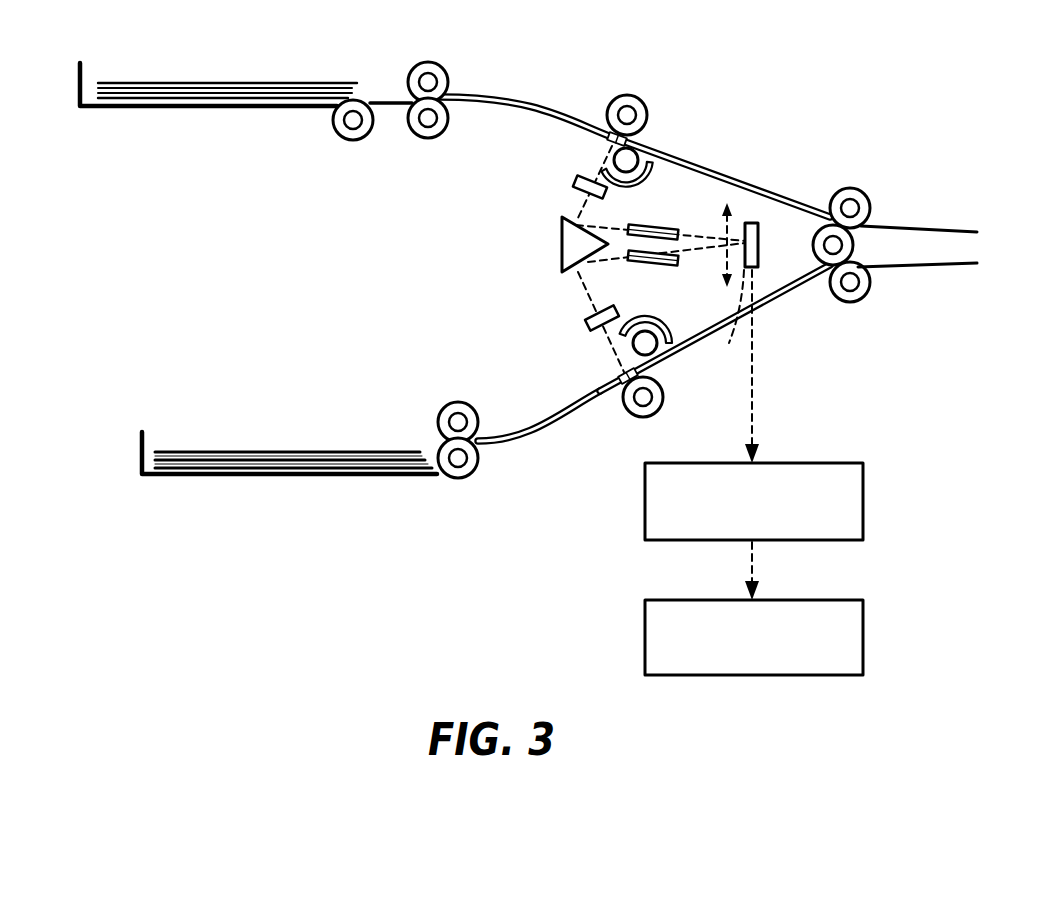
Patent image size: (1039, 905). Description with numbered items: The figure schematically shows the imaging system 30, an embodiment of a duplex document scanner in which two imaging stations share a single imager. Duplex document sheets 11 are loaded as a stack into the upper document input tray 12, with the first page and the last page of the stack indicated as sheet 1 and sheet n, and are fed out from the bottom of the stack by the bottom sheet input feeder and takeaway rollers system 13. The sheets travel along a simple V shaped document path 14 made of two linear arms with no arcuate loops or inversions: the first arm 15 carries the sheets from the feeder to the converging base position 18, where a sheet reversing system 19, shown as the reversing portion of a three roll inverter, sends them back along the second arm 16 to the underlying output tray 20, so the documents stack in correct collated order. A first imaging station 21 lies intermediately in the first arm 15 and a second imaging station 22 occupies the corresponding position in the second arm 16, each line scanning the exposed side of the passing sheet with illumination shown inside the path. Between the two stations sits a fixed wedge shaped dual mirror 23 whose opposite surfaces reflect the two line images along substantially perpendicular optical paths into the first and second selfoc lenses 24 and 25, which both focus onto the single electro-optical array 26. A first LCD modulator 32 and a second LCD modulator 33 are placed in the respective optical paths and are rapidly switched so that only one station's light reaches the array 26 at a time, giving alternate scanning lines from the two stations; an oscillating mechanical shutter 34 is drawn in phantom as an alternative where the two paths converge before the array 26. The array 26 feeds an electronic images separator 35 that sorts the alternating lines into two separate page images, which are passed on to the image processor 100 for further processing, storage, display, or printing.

The imaging system 30 is at (703, 50).
The duplex document sheets 11 is at (229, 82).
The N page order n is at (363, 92).
The first page order 1 is at (288, 121).
The document input tray 12 is at (165, 108).
The bottom sheet input feeder and takeaway rollers system 13 is at (368, 138).
The V shaped document path 14 is at (561, 106).
The first arm 15 is at (725, 172).
The second arm 16 is at (693, 347).
The base position 18 is at (824, 204).
The sheet reversing system 19 is at (857, 245).
The output tray 20 is at (288, 476).
The first imaging station 21 is at (600, 144).
The second imaging station 22 is at (610, 370).
The fixed wedge shaped dual mirror 23 is at (560, 232).
The first selfoc lens 24 is at (653, 226).
The second selfoc lens 25 is at (661, 268).
The electro-optical array 26 is at (753, 222).
The first LCD modulator 32 is at (576, 184).
The second LCD modulator 33 is at (589, 318).
The oscillating mechanical shutter 34 is at (729, 288).
The electronic images separator 35 is at (866, 505).
The image processor 100 is at (866, 638).